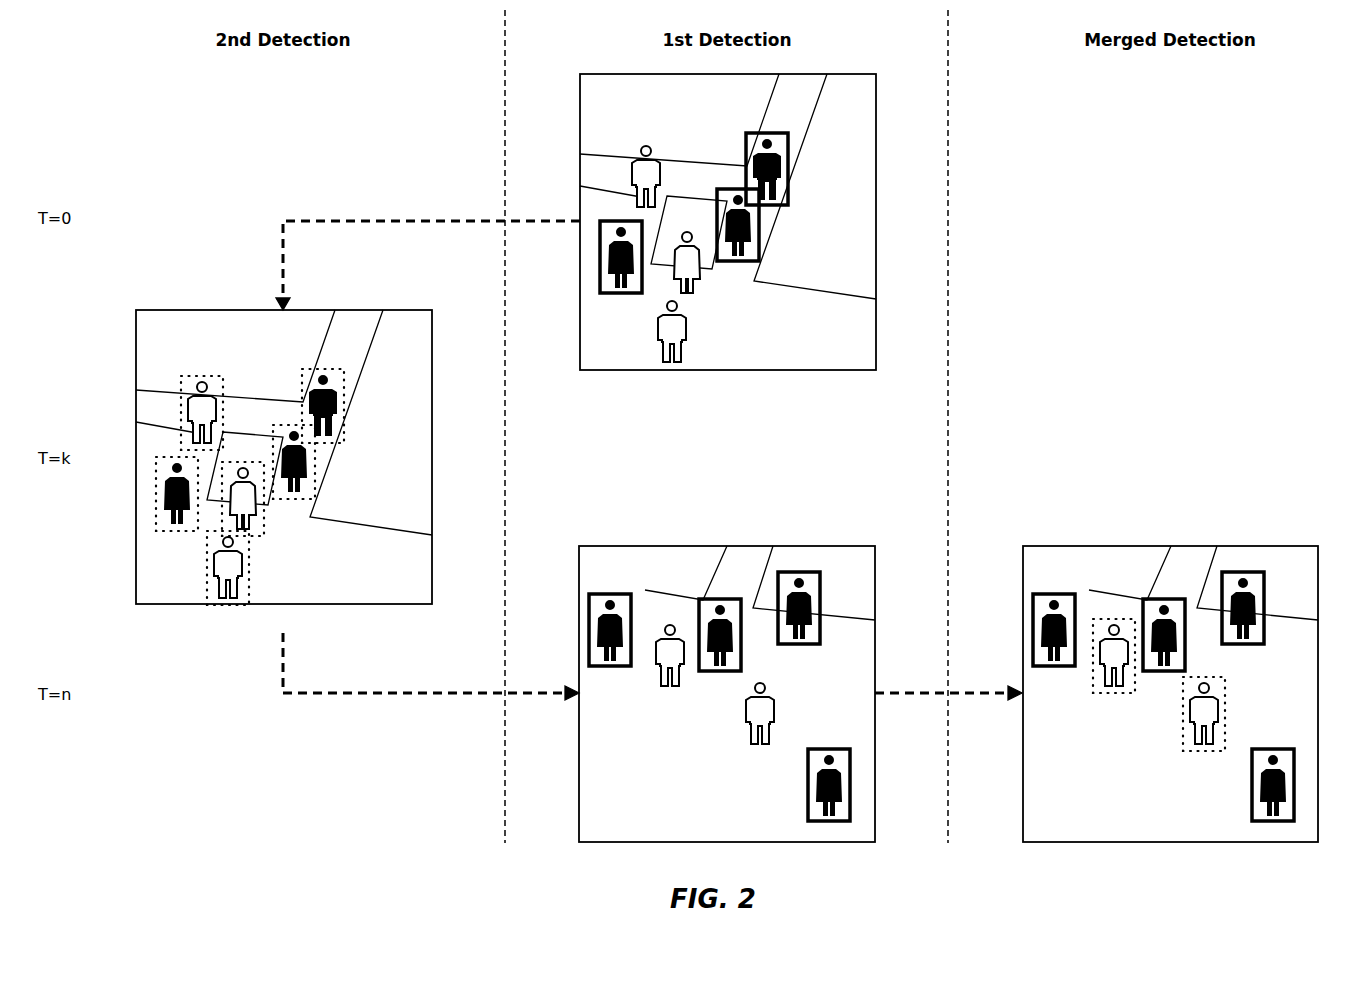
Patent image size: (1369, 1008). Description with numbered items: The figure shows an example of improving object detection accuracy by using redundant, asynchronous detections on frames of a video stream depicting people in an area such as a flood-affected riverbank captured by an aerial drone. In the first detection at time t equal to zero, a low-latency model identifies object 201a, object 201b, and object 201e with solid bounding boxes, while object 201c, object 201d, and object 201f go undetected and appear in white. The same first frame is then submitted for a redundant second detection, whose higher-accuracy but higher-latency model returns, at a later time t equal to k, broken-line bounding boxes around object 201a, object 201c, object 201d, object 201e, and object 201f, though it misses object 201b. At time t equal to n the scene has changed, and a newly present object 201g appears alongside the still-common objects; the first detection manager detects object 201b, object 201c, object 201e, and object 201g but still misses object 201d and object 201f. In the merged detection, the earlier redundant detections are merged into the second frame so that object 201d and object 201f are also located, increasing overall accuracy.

The object 201a is at (330, 387).
The object 201b is at (302, 465).
The object 201c is at (250, 495).
The object 201d is at (232, 563).
The object 201e is at (170, 490).
The object 201f is at (184, 458).
The object 201g is at (812, 787).